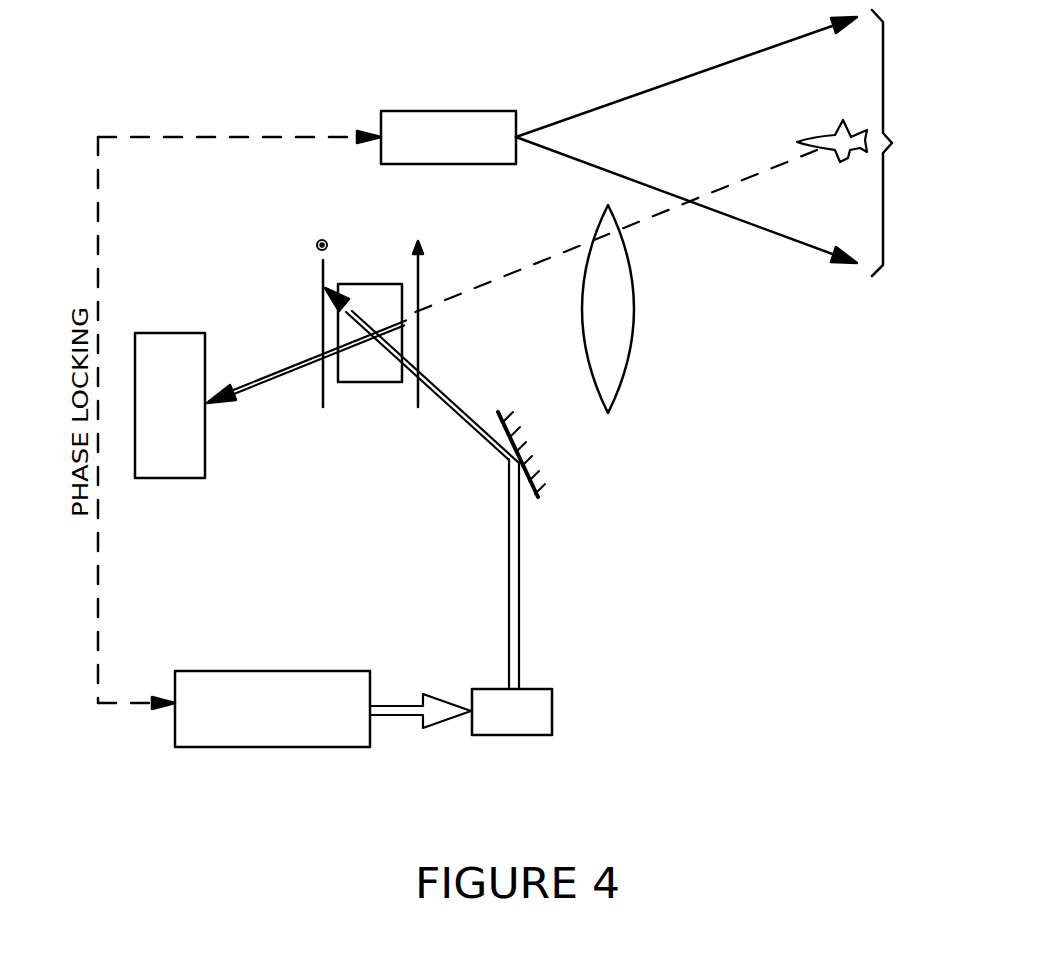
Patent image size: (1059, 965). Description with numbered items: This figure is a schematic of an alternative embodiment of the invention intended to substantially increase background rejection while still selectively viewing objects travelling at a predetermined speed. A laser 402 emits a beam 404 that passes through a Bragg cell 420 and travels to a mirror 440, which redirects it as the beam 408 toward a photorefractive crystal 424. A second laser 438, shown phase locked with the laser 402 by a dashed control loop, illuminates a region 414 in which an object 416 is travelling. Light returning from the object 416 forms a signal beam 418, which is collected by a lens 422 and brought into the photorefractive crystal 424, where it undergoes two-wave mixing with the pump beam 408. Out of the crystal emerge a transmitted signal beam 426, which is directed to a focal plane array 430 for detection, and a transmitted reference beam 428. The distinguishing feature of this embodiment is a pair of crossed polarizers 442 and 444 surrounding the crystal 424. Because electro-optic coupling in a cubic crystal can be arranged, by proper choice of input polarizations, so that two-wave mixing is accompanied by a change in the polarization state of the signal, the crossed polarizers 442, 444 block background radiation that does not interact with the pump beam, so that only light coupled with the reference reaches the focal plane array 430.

The laser 402 is at (303, 748).
The beam 404 is at (520, 616).
The beam 408 is at (467, 427).
The region 414 is at (893, 143).
The object 416 is at (822, 134).
The signal beam 418 is at (773, 168).
The Bragg cell 420 is at (552, 712).
The lens 422 is at (638, 307).
The photorefractive crystal 424 is at (363, 383).
The transmitted signal beam 426 is at (282, 379).
The transmitted reference beam 428 is at (348, 318).
The focal plane array 430 is at (158, 480).
The second laser 438 is at (465, 111).
The mirror 440 is at (498, 412).
The polarizer 442 is at (325, 265).
The polarizer 444 is at (418, 286).